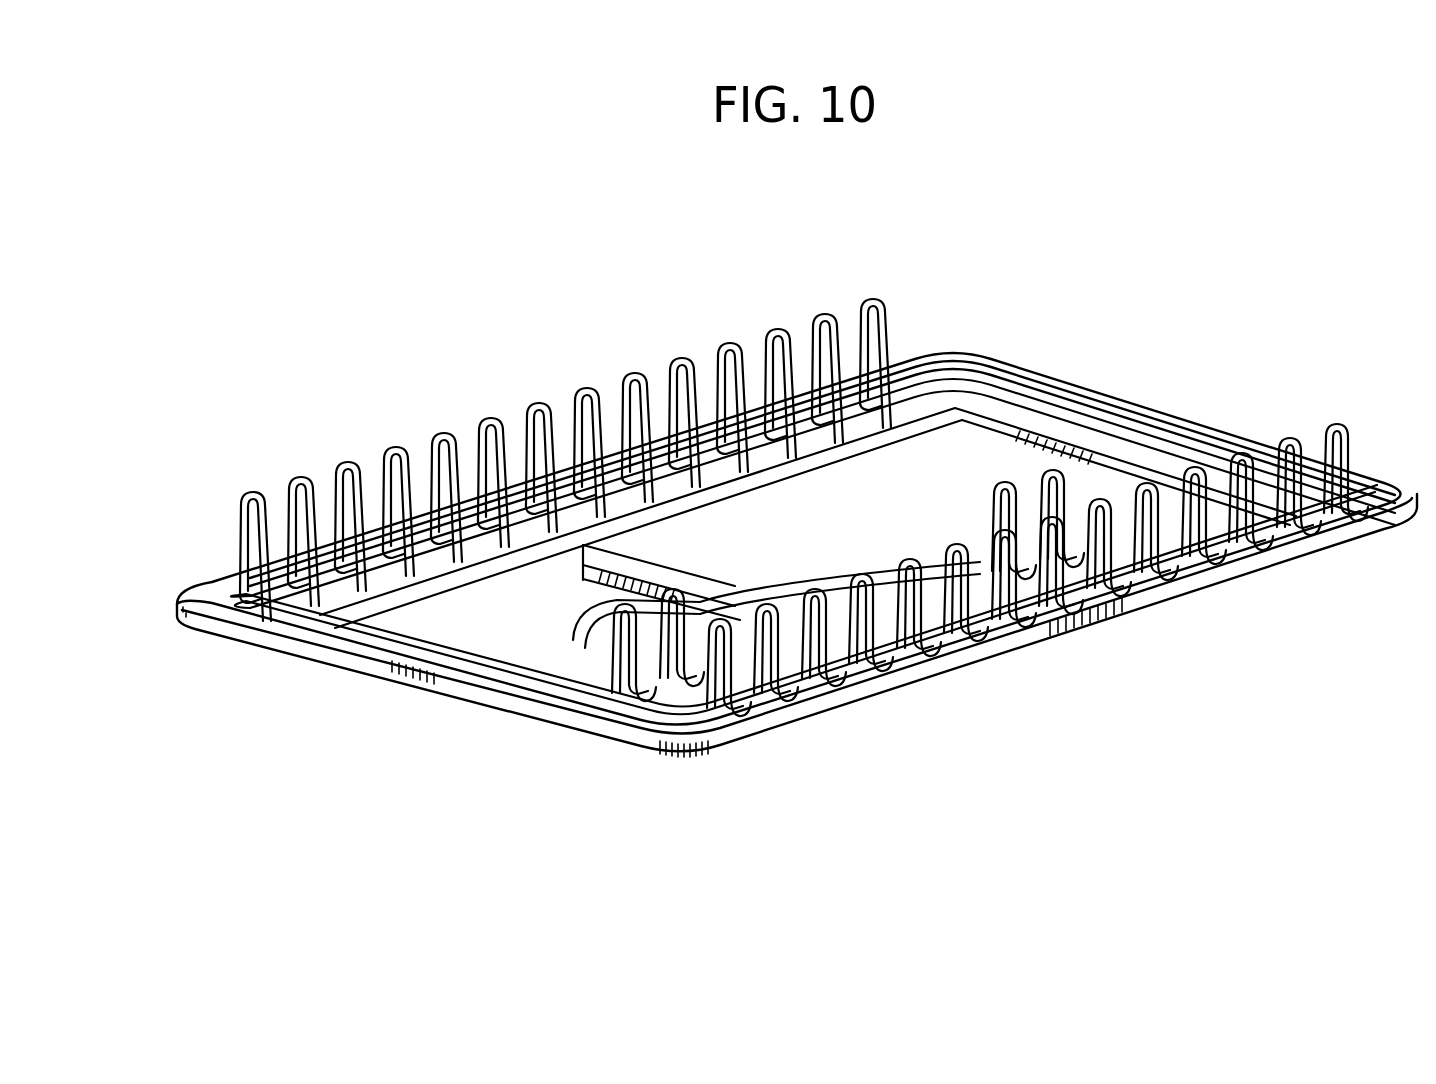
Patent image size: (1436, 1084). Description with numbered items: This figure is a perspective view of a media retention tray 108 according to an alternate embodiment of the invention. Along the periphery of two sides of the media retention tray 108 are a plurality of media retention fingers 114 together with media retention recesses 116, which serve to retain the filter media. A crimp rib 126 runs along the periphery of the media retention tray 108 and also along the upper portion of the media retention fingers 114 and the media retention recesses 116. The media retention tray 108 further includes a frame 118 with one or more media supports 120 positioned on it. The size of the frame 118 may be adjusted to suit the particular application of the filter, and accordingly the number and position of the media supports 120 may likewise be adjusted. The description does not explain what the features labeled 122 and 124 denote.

The media retention tray 108 is at (1187, 281).
The media retention fingers 114 is at (884, 303).
The media retention recesses 116 is at (1219, 553).
The frame 118 is at (573, 578).
The media supports 120 is at (980, 437).
The curved ridge 122 is at (573, 640).
The front tines 124 is at (658, 680).
The crimp rib 126 is at (257, 492).